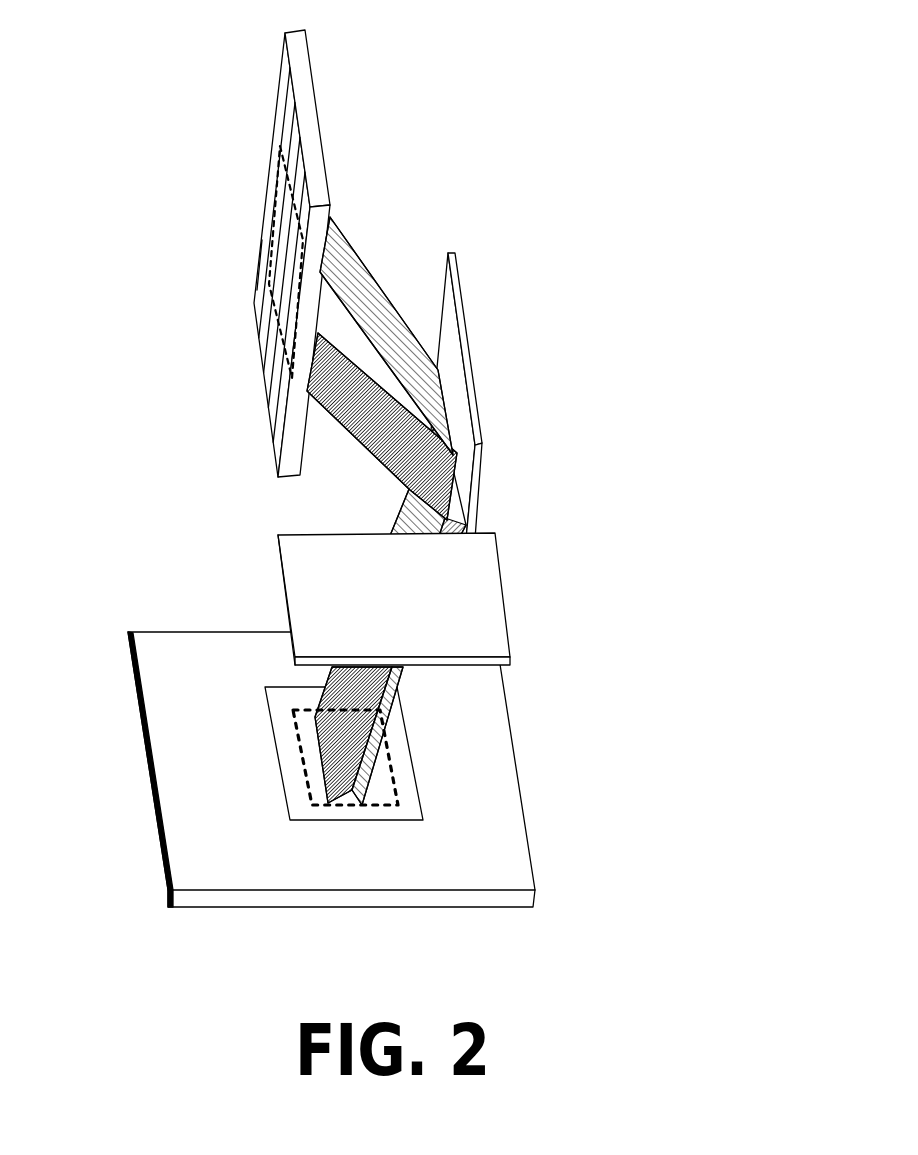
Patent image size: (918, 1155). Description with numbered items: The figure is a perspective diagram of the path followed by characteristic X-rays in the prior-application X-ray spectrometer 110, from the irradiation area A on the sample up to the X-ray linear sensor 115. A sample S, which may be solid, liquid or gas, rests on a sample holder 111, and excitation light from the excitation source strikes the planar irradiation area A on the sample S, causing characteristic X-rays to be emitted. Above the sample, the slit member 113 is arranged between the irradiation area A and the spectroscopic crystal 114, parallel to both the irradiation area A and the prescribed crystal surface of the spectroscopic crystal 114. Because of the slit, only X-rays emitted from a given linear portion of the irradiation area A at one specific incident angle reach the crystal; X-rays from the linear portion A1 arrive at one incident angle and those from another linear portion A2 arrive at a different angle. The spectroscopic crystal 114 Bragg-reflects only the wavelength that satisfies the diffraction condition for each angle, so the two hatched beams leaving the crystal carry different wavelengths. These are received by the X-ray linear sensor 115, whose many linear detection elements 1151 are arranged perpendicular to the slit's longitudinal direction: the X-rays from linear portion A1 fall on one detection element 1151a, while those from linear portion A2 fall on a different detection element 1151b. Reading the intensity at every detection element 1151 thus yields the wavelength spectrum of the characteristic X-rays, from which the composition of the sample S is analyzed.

The X-ray spectrometer 110 is at (398, 493).
The sample holder 111 is at (490, 818).
The slit member 113 is at (385, 547).
The spectroscopic crystal 114 is at (480, 415).
The X-ray linear sensor 115 is at (288, 253).
The detection element 1151 is at (263, 238).
The detection element 1151a is at (257, 267).
The detection element 1151b is at (282, 133).
The irradiation area A is at (287, 710).
The linear portion A1 is at (320, 750).
The linear portion A2 is at (360, 777).
The sample S is at (405, 770).